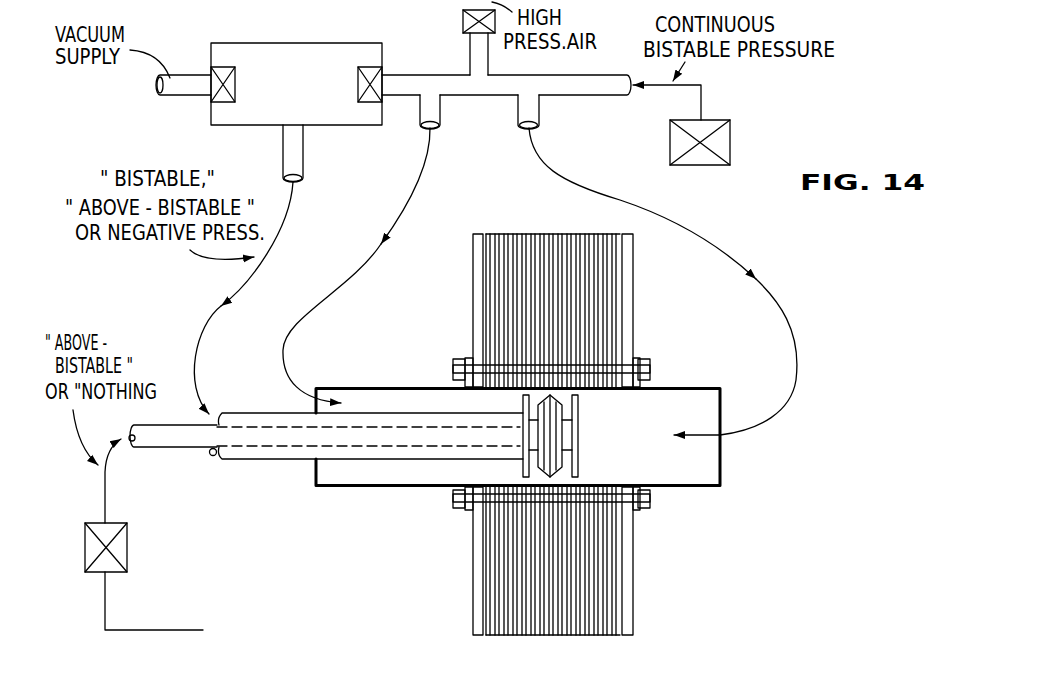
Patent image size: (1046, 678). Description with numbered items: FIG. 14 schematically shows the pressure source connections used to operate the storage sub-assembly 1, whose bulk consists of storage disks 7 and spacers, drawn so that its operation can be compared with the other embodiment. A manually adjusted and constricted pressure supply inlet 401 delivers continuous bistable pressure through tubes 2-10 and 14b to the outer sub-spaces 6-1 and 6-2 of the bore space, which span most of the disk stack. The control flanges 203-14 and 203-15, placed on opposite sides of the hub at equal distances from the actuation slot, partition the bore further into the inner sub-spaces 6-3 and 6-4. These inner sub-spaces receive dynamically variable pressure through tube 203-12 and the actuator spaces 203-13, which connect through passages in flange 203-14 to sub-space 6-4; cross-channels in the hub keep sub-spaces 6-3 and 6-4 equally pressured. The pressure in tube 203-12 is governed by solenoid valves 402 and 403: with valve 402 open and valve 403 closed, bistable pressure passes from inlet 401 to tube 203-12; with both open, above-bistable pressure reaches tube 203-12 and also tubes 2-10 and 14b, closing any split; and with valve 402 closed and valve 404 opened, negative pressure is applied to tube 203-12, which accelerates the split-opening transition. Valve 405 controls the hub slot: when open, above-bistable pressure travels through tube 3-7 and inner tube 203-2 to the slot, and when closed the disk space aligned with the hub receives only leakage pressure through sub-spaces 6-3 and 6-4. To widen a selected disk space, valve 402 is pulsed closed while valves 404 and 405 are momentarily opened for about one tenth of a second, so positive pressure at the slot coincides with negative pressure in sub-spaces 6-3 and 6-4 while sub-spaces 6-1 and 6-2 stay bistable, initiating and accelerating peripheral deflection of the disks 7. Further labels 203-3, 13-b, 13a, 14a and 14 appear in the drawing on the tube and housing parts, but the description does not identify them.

The valve 404 is at (222, 67).
The valve 402 is at (364, 67).
The valve 403 is at (462, 20).
The pressure supply inlet 401 is at (731, 143).
The valve 405 is at (127, 558).
The tube 203-12 is at (207, 320).
The tube 2-10 is at (393, 223).
The tube 14b is at (703, 240).
The tube 3-7 is at (105, 500).
The inner tube 203-2 is at (145, 437).
The outer tube 203-3 is at (255, 462).
The spaces 203-13 is at (209, 455).
The housing 13-b is at (383, 400).
The housing end wall 13a is at (328, 492).
The housing end wall 14a is at (700, 488).
The sub-assembly 1 is at (577, 434).
The disks 7 is at (603, 320).
The flange bolts 14 is at (636, 512).
The sub-space 6-1 is at (643, 445).
The sub-space 6-2 is at (510, 405).
The sub-space 6-3 is at (565, 467).
The control flange 203-15 is at (579, 403).
The control flange 203-14 is at (520, 463).
The sub-space 6-4 is at (533, 468).